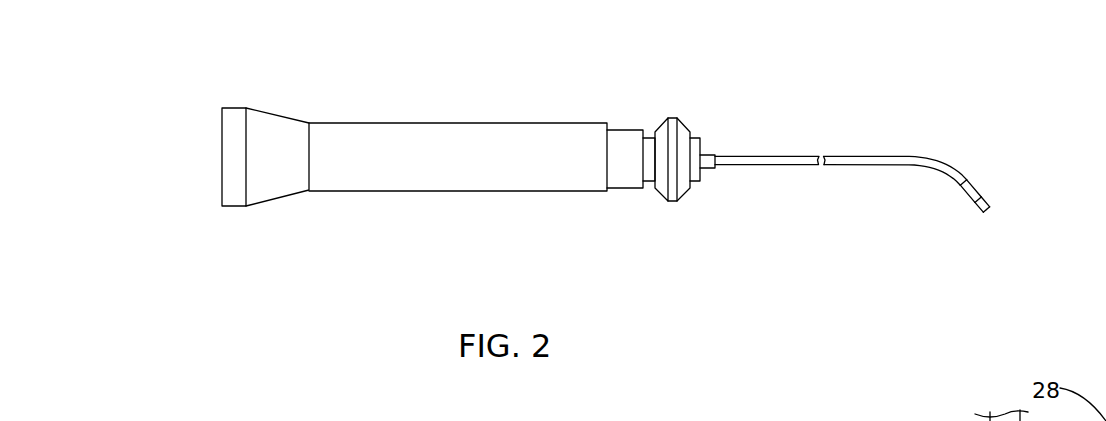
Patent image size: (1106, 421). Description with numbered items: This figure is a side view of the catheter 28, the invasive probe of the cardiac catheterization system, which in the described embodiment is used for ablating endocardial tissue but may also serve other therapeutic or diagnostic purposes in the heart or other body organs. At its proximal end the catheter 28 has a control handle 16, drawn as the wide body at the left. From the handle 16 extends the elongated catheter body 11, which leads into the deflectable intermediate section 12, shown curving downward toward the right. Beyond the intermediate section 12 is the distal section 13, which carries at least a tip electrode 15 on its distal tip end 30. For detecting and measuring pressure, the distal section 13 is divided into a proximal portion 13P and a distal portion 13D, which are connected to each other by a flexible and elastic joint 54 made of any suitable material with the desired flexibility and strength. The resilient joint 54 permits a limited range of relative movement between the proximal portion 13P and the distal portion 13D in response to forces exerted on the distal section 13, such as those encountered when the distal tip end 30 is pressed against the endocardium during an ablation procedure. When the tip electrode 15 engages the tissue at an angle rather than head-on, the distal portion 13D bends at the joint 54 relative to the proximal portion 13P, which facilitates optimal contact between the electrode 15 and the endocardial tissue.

The catheter 28 is at (566, 94).
The control handle 16 is at (375, 131).
The elongated catheter body 11 is at (777, 162).
The deflectable intermediate section 12 is at (905, 170).
The distal section 13 is at (970, 206).
The proximal portion 13P is at (972, 187).
The distal portion 13D is at (986, 199).
The joint 54 is at (981, 196).
The distal tip end 30 is at (991, 210).
The tip electrode 15 is at (983, 214).